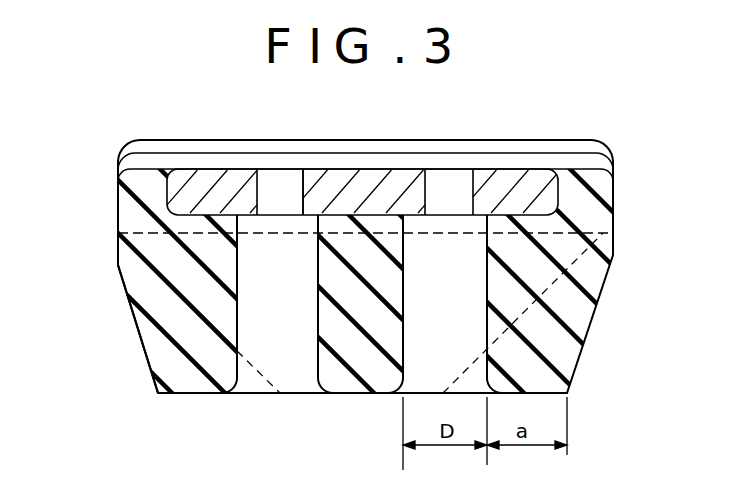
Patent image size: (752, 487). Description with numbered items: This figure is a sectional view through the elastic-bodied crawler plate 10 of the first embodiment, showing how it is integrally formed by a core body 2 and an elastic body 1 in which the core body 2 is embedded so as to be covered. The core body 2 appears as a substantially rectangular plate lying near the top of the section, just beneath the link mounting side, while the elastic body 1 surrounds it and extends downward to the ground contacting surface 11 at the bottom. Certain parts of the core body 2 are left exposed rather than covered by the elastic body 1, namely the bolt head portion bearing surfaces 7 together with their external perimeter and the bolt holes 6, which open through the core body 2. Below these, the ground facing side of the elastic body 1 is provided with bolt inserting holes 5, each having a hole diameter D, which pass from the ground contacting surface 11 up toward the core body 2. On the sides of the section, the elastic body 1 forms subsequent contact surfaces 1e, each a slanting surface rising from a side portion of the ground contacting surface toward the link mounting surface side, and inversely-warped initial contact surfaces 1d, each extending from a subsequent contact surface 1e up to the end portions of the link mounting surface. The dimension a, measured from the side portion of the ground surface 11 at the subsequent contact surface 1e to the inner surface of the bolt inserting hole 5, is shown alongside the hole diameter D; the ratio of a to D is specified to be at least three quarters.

The elastic body 1 is at (615, 202).
The inversely-warped initial contact surface 1d is at (117, 197).
The subsequent contact surface 1e is at (134, 322).
The core body 2 is at (505, 180).
The bolt inserting hole 5 is at (300, 367).
The bolt hole 6 is at (280, 187).
The bolt head portion bearing surface 7 is at (313, 216).
The elastic-bodied crawler plate 10 is at (627, 140).
The ground contacting surface 11 is at (191, 394).